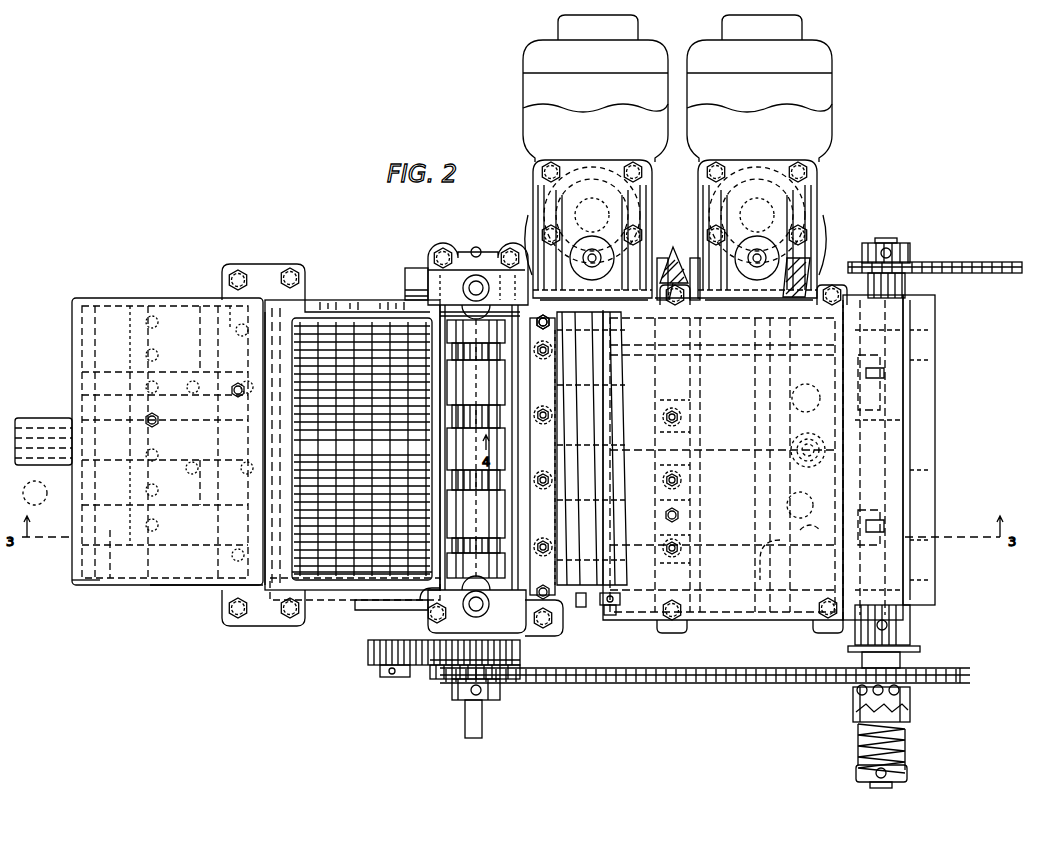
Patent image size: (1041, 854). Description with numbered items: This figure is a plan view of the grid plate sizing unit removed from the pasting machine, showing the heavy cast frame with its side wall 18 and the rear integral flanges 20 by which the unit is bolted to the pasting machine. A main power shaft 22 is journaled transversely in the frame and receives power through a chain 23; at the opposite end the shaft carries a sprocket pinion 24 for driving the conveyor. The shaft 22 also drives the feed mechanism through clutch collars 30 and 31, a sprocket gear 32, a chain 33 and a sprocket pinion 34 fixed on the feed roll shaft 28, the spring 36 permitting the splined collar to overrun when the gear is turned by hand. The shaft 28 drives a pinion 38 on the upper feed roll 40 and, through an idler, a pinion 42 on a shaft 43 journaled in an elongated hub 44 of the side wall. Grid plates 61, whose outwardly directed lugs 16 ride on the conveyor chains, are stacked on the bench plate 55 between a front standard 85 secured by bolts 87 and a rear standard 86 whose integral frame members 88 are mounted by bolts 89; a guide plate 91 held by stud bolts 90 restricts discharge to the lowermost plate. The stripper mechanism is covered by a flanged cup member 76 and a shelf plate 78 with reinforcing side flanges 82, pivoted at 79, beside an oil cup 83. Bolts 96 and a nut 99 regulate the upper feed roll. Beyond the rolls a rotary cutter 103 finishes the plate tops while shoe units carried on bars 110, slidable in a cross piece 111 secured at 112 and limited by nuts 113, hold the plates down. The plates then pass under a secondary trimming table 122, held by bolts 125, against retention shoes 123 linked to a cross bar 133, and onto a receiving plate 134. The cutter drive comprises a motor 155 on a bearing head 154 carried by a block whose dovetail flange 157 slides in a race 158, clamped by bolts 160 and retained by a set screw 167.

The motor 155 is at (521, 107).
The bearing head 154 is at (545, 195).
The set screw 167 is at (538, 222).
The bolts 160 is at (692, 250).
The vertical flange 157 is at (673, 255).
The vertical race 158 is at (815, 300).
The bolts 125 is at (833, 283).
The side wall 18 is at (845, 290).
The main power shaft 22 is at (893, 240).
The chain 23 is at (985, 262).
The integral flanges 20 is at (930, 298).
The bolts 89 is at (443, 248).
The integral frame members 88 is at (500, 272).
The bolts 96 is at (474, 280).
The rear wall or standard 86 is at (418, 268).
The stud bolts 90 is at (418, 294).
The guide plate 91 is at (440, 312).
The outwardly directed lugs 16 is at (302, 624).
The grid plates 61 is at (340, 330).
The front wall or standard 85 is at (272, 300).
The bolts 87 is at (292, 268).
The flanged cup member 76 is at (53, 425).
The cup 83 is at (116, 462).
The pivot 79 is at (78, 588).
The shelf plate 78 is at (120, 555).
The reinforcing side flanges 82 is at (165, 588).
The bench plate 55 is at (346, 578).
The elongated hub 44 is at (372, 608).
The pinion 42 is at (372, 668).
The shaft 43 is at (392, 677).
The sprocket pinion 34 is at (460, 692).
The pinion 38 is at (498, 640).
The shaft 28 is at (474, 740).
The nut 99 is at (440, 680).
The securing means 112 is at (550, 322).
The rotary cutter 103 is at (592, 350).
The adjustable nuts 113 is at (550, 360).
The bars 110 is at (543, 425).
The cross piece 111 is at (570, 486).
The upper feed roll 40 is at (490, 528).
The cross bar 133 is at (612, 616).
The secondary trimming table 122 is at (755, 612).
The retention shoes 123 is at (775, 405).
The receiving plate 134 is at (808, 455).
The sprocket pinion 24 is at (920, 649).
The clutch collar 31 is at (900, 697).
The sprocket gear 32 is at (960, 683).
The clutch collar 30 is at (905, 718).
The spring 36 is at (905, 746).
The chain 33 is at (688, 684).